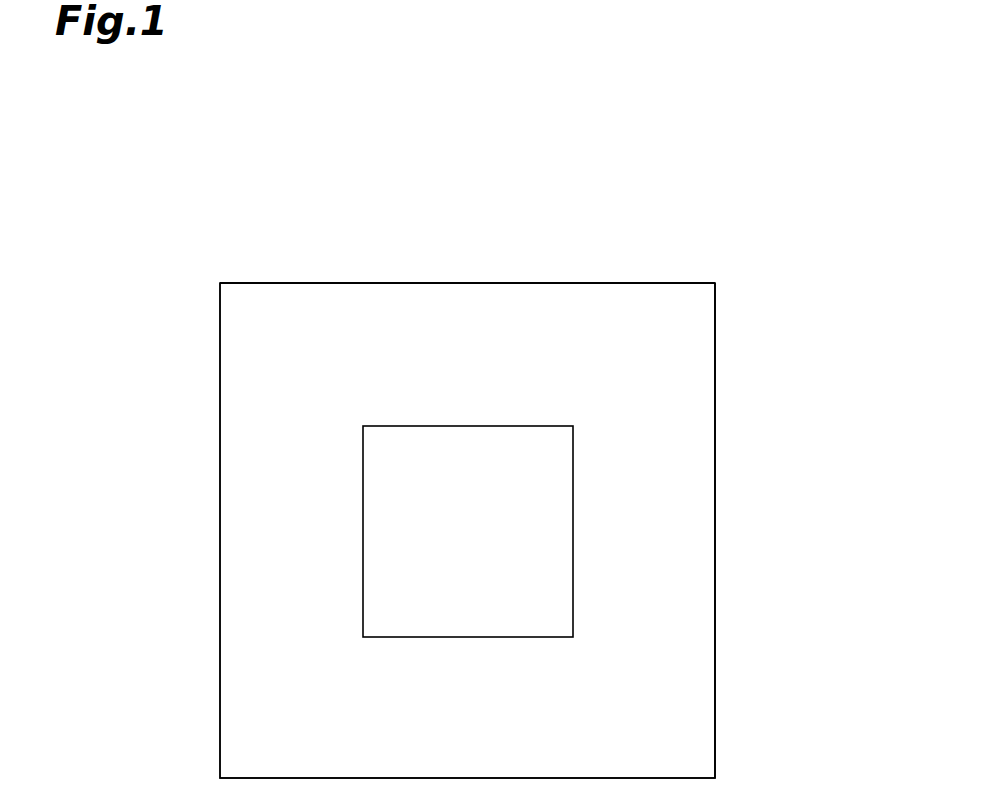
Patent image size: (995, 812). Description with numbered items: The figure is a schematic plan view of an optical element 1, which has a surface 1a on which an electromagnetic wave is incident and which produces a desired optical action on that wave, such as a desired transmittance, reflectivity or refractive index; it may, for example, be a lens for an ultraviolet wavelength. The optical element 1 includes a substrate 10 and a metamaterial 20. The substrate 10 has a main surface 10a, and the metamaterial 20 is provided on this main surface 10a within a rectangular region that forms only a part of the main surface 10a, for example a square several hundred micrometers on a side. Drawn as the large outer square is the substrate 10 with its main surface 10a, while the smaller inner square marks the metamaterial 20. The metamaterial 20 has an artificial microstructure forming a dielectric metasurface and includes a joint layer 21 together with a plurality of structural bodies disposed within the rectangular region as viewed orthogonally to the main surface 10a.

The optical element 1 is at (599, 191).
The substrate 10 is at (437, 283).
The main surface 10a is at (347, 324).
The surface 1a is at (633, 322).
The joint layer 21 is at (662, 376).
The metamaterial 20 is at (574, 567).